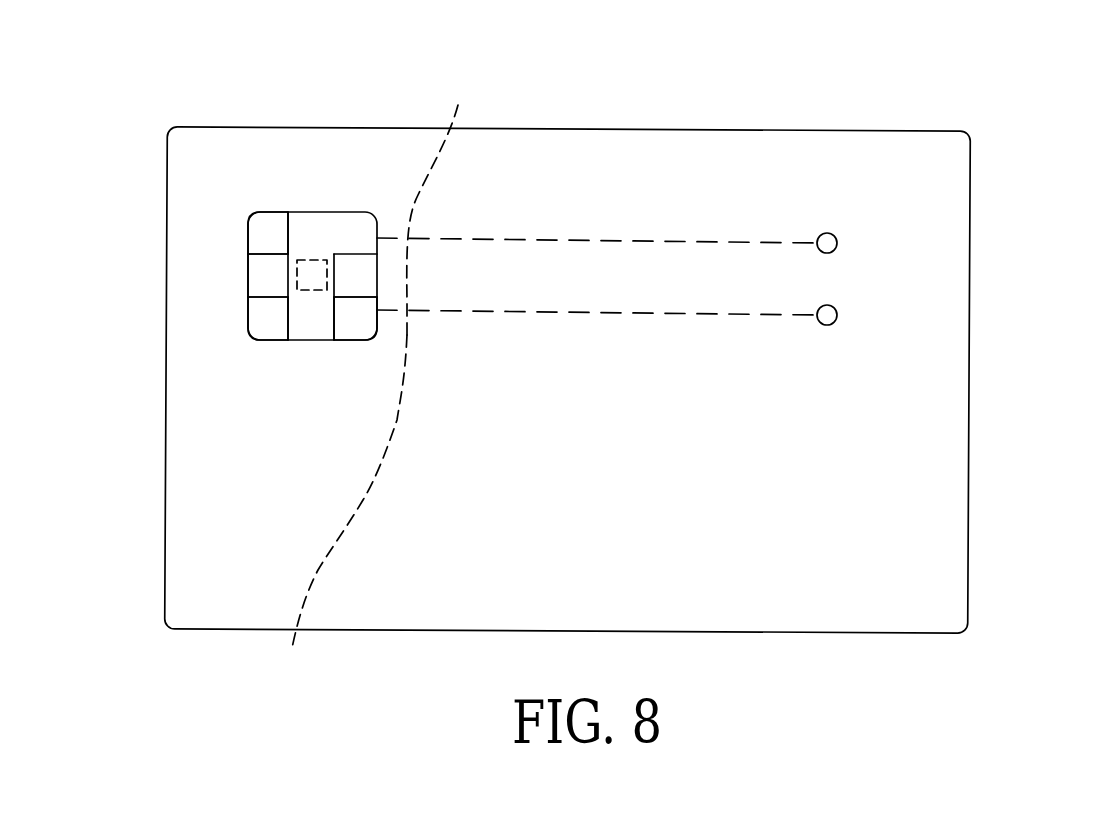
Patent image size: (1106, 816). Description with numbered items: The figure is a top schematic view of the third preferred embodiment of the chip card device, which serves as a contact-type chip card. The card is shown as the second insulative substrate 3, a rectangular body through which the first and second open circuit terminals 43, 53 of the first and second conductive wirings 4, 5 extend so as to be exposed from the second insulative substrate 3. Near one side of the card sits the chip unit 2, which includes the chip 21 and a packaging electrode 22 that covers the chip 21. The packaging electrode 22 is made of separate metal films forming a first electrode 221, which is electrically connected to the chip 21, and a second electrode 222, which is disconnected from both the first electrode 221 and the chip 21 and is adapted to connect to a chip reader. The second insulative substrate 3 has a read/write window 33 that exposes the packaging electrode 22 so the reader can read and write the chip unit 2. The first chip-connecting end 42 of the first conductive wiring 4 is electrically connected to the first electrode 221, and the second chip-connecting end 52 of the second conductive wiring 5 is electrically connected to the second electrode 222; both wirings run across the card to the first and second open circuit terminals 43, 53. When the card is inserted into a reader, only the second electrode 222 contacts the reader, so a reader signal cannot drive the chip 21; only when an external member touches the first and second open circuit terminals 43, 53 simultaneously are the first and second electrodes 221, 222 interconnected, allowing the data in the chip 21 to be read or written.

The second insulative substrate 3 is at (969, 178).
The chip unit 2 is at (340, 192).
The chip 21 is at (312, 259).
The packaging electrode 22 is at (271, 218).
The first electrode 221 is at (308, 333).
The second electrode 222 is at (355, 333).
The read/write window 33 is at (236, 269).
The first conductive wiring 4 is at (643, 241).
The first chip-connecting end 42 is at (434, 198).
The first open circuit terminal 43 is at (829, 233).
The second conductive wiring 5 is at (527, 312).
The second chip-connecting end 52 is at (341, 511).
The second open circuit terminal 53 is at (837, 315).